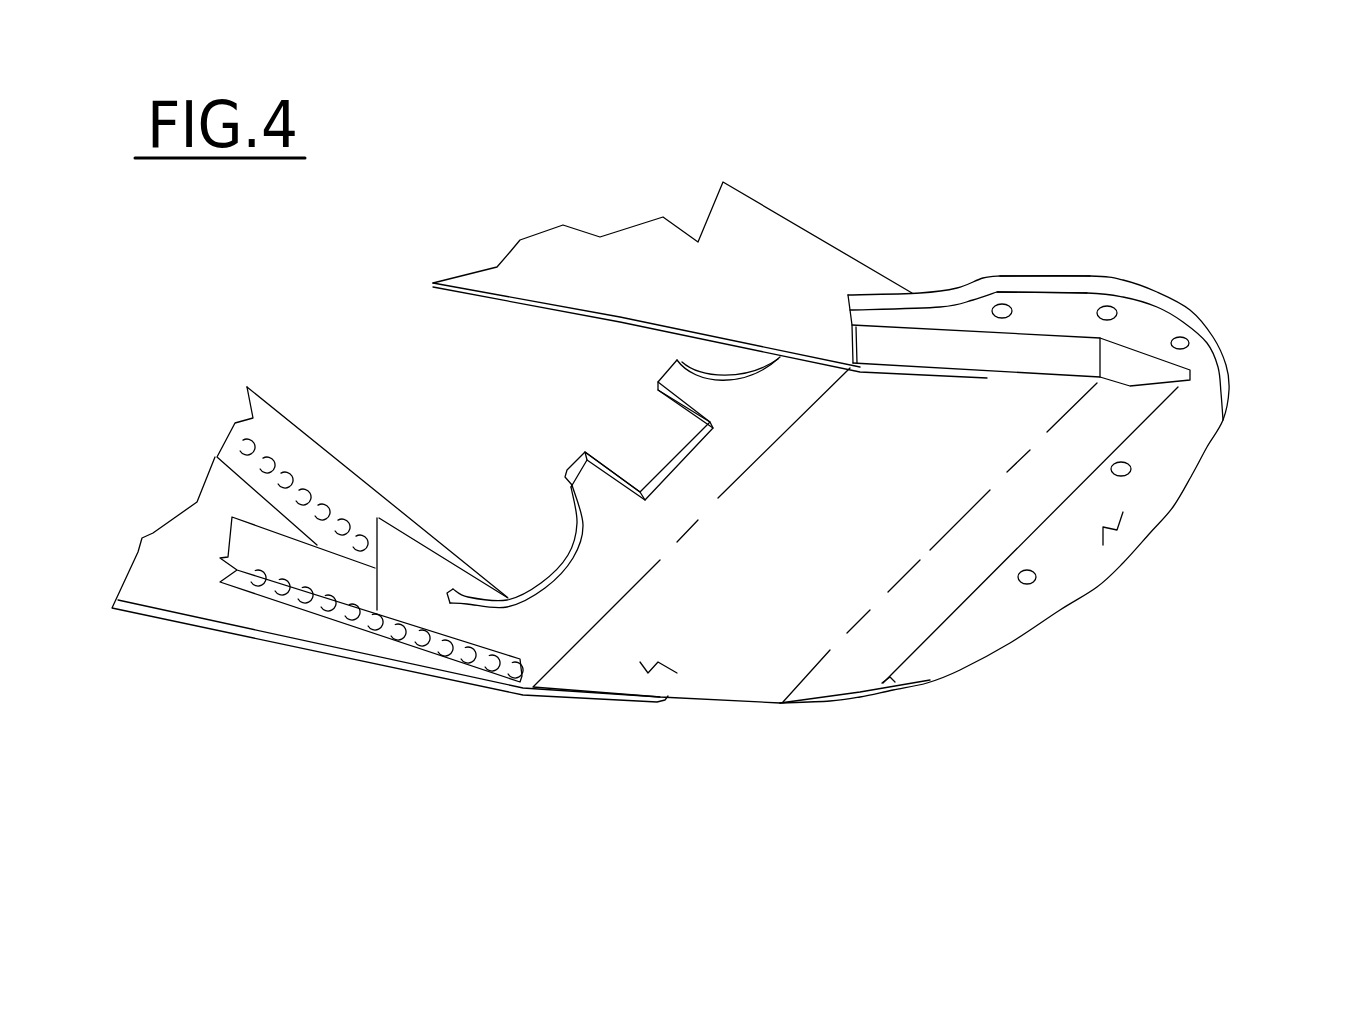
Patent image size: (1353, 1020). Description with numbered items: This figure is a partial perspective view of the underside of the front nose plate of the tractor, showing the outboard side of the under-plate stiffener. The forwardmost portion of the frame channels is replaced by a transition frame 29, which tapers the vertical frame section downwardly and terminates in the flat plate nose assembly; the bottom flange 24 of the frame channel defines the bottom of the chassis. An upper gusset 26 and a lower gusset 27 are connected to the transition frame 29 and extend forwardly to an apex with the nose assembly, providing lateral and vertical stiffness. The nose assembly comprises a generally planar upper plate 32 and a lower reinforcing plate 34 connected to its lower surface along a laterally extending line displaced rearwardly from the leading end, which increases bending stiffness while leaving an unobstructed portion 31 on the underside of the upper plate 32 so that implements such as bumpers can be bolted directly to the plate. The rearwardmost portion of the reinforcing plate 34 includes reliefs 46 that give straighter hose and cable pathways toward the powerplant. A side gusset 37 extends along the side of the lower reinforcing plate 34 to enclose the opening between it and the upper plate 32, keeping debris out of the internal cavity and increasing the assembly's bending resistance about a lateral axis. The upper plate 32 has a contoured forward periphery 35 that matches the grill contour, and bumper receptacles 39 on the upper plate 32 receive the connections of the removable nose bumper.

The bottom flange 24 is at (487, 297).
The upper gusset 26 is at (310, 470).
The lower gusset 27 is at (280, 558).
The transition frame 29 is at (757, 253).
The unobstructed portion 31 is at (1108, 533).
The upper plate 32 is at (1004, 708).
The lower reinforcing plate 34 is at (658, 687).
The contoured forward periphery 35 is at (1197, 473).
The side gusset 37 is at (1033, 345).
The bumper receptacles 39 is at (1105, 313).
The reliefs 46 is at (737, 372).